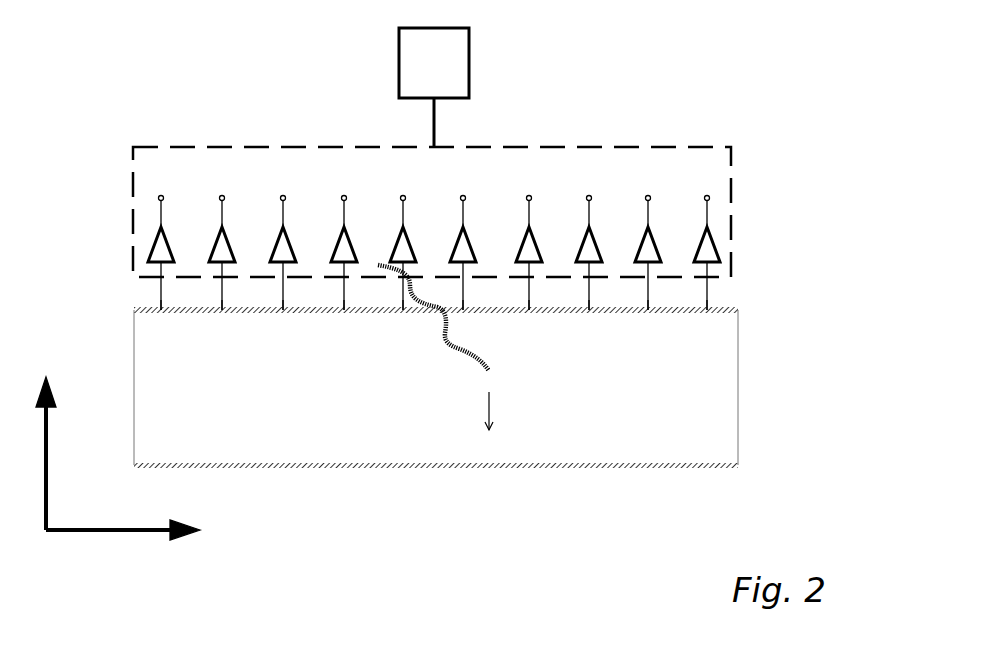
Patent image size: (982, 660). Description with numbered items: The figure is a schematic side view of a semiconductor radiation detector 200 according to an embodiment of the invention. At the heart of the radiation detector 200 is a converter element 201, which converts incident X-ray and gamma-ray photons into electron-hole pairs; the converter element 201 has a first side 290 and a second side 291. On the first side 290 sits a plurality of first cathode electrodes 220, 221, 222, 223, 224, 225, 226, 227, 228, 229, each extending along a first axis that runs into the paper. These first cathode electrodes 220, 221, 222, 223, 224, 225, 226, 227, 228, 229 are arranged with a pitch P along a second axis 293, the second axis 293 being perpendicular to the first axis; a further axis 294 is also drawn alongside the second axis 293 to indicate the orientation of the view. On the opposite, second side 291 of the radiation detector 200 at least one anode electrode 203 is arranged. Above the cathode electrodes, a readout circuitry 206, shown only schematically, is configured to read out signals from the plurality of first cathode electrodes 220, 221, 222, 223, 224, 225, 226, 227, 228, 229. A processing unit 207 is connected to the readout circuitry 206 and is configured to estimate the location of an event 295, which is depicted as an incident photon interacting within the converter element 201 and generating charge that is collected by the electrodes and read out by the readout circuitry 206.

The semiconductor radiation detector 200 is at (823, 197).
The converter element 201 is at (486, 386).
The anode electrode 203 is at (436, 494).
The readout circuitry 206 is at (432, 190).
The processing unit 207 is at (485, 81).
The first cathode electrode 220 is at (203, 379).
The first cathode electrode 221 is at (271, 356).
The first cathode electrode 222 is at (287, 335).
The first cathode electrode 223 is at (381, 356).
The first cathode electrode 224 is at (416, 335).
The first cathode electrode 225 is at (491, 322).
The first cathode electrode 226 is at (581, 356).
The first cathode electrode 227 is at (621, 340).
The first cathode electrode 228 is at (663, 327).
The first cathode electrode 229 is at (670, 370).
The first side 290 is at (781, 264).
The second side 291 is at (773, 521).
The second axis 293 is at (123, 553).
The y axis 294 is at (82, 453).
The event 295 is at (437, 338).